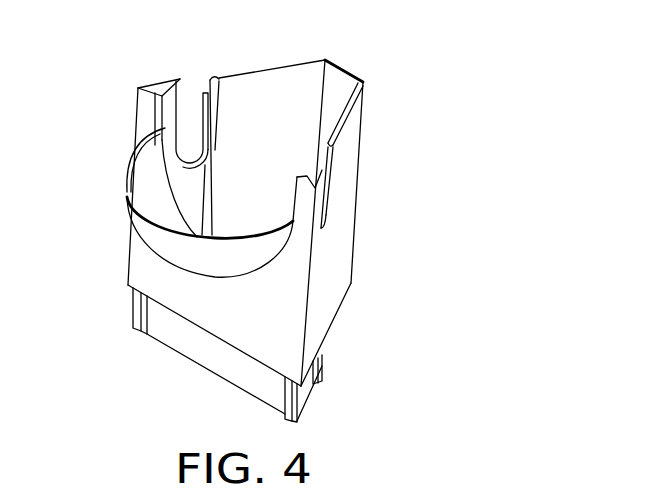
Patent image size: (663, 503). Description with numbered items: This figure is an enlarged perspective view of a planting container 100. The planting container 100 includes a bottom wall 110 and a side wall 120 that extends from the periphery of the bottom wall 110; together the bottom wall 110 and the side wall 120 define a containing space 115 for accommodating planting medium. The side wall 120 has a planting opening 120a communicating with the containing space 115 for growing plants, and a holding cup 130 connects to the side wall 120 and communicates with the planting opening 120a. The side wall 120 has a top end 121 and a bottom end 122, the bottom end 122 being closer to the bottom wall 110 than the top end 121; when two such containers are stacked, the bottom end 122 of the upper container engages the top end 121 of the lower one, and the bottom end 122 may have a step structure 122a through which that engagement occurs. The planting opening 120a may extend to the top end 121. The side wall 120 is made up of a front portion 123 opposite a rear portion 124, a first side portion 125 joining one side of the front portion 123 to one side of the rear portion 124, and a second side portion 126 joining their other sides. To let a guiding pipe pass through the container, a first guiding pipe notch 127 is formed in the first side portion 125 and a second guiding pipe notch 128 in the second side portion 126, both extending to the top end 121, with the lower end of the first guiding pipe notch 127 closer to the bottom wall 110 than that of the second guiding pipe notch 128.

The planting container 100 is at (457, 153).
The bottom wall 110 is at (178, 357).
The containing space 115 is at (283, 101).
The side wall 120 is at (334, 264).
The planting opening 120a is at (161, 118).
The top end 121 is at (342, 137).
The bottom end 122 is at (333, 354).
The step structure 122a is at (333, 321).
The front portion 123 is at (150, 113).
The rear portion 124 is at (339, 87).
The first side portion 125 is at (253, 95).
The second side portion 126 is at (359, 124).
The first guiding pipe notch 127 is at (195, 121).
The second guiding pipe notch 128 is at (330, 191).
The holding cup 130 is at (153, 228).